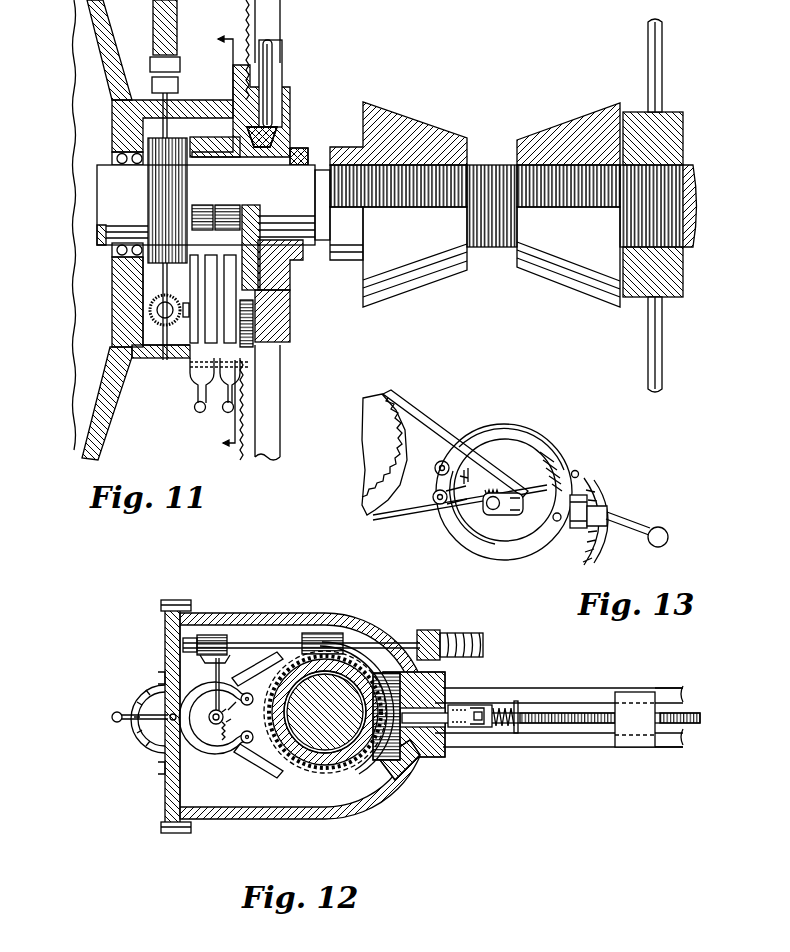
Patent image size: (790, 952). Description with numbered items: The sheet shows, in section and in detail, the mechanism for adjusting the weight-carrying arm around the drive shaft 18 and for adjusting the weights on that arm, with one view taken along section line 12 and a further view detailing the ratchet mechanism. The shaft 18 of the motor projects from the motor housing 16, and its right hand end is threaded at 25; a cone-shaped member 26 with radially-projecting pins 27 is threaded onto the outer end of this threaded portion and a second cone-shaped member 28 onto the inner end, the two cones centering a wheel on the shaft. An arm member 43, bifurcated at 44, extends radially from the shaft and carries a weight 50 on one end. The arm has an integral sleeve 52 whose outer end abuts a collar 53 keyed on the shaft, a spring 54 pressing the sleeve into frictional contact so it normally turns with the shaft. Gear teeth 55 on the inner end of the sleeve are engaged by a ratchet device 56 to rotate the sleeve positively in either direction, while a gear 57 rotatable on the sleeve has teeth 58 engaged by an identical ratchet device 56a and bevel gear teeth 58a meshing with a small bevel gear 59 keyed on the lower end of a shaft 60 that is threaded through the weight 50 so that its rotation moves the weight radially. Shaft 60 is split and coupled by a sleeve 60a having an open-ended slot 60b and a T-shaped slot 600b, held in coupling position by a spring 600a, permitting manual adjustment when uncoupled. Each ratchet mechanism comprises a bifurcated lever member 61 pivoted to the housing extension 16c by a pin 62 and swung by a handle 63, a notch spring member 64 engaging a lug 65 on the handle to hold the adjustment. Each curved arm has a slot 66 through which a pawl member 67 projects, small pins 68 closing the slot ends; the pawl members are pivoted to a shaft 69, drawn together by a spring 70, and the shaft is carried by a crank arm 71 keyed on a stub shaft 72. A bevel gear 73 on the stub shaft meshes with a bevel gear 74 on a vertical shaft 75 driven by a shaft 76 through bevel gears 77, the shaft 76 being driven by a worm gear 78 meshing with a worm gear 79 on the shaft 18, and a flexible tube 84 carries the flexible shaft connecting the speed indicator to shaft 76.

In FIG. 11, the section line 12 is at (221, 232).
In FIG. 11, the motor housing 16 is at (93, 48).
In FIG. 11, the extension of the motor housing 16c is at (150, 360).
In FIG. 12, the extension of the motor housing 16c is at (230, 819).
In FIG. 11, the drive shaft 18 is at (112, 211).
In FIG. 12, the drive shaft 18 is at (345, 745).
In FIG. 11, the threaded portion 25 is at (490, 175).
In FIG. 11, the cone-shaped member 26 is at (572, 130).
In FIG. 11, the radially-projecting pins 27 is at (650, 47).
In FIG. 11, the second cone-shaped member 28 is at (438, 133).
In FIG. 12, the arm member 43 is at (585, 747).
In FIG. 12, the bifurcations 44 is at (665, 749).
In FIG. 12, the weight 50 is at (635, 695).
In FIG. 11, the sleeve 52 is at (285, 148).
In FIG. 12, the sleeve 52 is at (340, 772).
In FIG. 11, the collar 53 is at (291, 258).
In FIG. 11, the spring 54 is at (189, 150).
In FIG. 11, the gear teeth 55 is at (205, 205).
In FIG. 12, the gear teeth 55 is at (330, 765).
In FIG. 11, the ratchet device 56 is at (190, 362).
In FIG. 11, the ratchet device 56a is at (255, 347).
In FIG. 11, the gear 57 is at (250, 145).
In FIG. 12, the gear 57 is at (392, 775).
In FIG. 11, the teeth 58 is at (232, 205).
In FIG. 13, the teeth 58 is at (376, 460).
In FIG. 11, the bevel gear teeth 58a is at (256, 220).
In FIG. 11, the small bevel gear 59 is at (282, 130).
In FIG. 12, the small bevel gear 59 is at (416, 712).
In FIG. 11, the shaft 60 is at (268, 85).
In FIG. 12, the shaft 60 is at (563, 712).
In FIG. 12, the sleeve 60a is at (470, 705).
In FIG. 12, the open-ended slot 60b is at (457, 728).
In FIG. 12, the spring 600a is at (506, 707).
In FIG. 12, the T-shaped slot 600b is at (484, 728).
In FIG. 13, the bifurcated lever member 61 is at (552, 462).
In FIG. 12, the bifurcated lever member 61 is at (203, 752).
In FIG. 13, the pin 62 is at (557, 523).
In FIG. 11, the handle 63 is at (196, 404).
In FIG. 13, the handle 63 is at (642, 520).
In FIG. 12, the handle 63 is at (112, 719).
In FIG. 13, the notch spring member 64 is at (598, 553).
In FIG. 12, the notch spring member 64 is at (138, 703).
In FIG. 13, the lug 65 is at (602, 510).
In FIG. 13, the slot 66 is at (522, 436).
In FIG. 11, the pawl member 67 is at (258, 292).
In FIG. 13, the pawl member 67 is at (428, 430).
In FIG. 12, the pawl member 67 is at (258, 765).
In FIG. 13, the small pins 68 is at (434, 494).
In FIG. 13, the shaft 69 is at (579, 476).
In FIG. 13, the spring 70 is at (470, 478).
In FIG. 12, the spring 70 is at (223, 732).
In FIG. 13, the crank arm 71 is at (504, 493).
In FIG. 13, the stub shaft 72 is at (500, 516).
In FIG. 12, the bevel gear 73 is at (218, 742).
In FIG. 12, the bevel gear 74 is at (240, 694).
In FIG. 12, the vertical shaft 75 is at (214, 677).
In FIG. 11, the shaft 76 is at (143, 128).
In FIG. 12, the shaft 76 is at (272, 643).
In FIG. 11, the bevel gears 77 is at (157, 322).
In FIG. 12, the bevel gears 77 is at (203, 635).
In FIG. 11, the worm gear 78 is at (162, 185).
In FIG. 12, the worm gear 78 is at (322, 633).
In FIG. 11, the worm gear 79 is at (143, 267).
In FIG. 12, the worm gear 79 is at (360, 672).
In FIG. 12, the flexible tube 84 is at (463, 632).